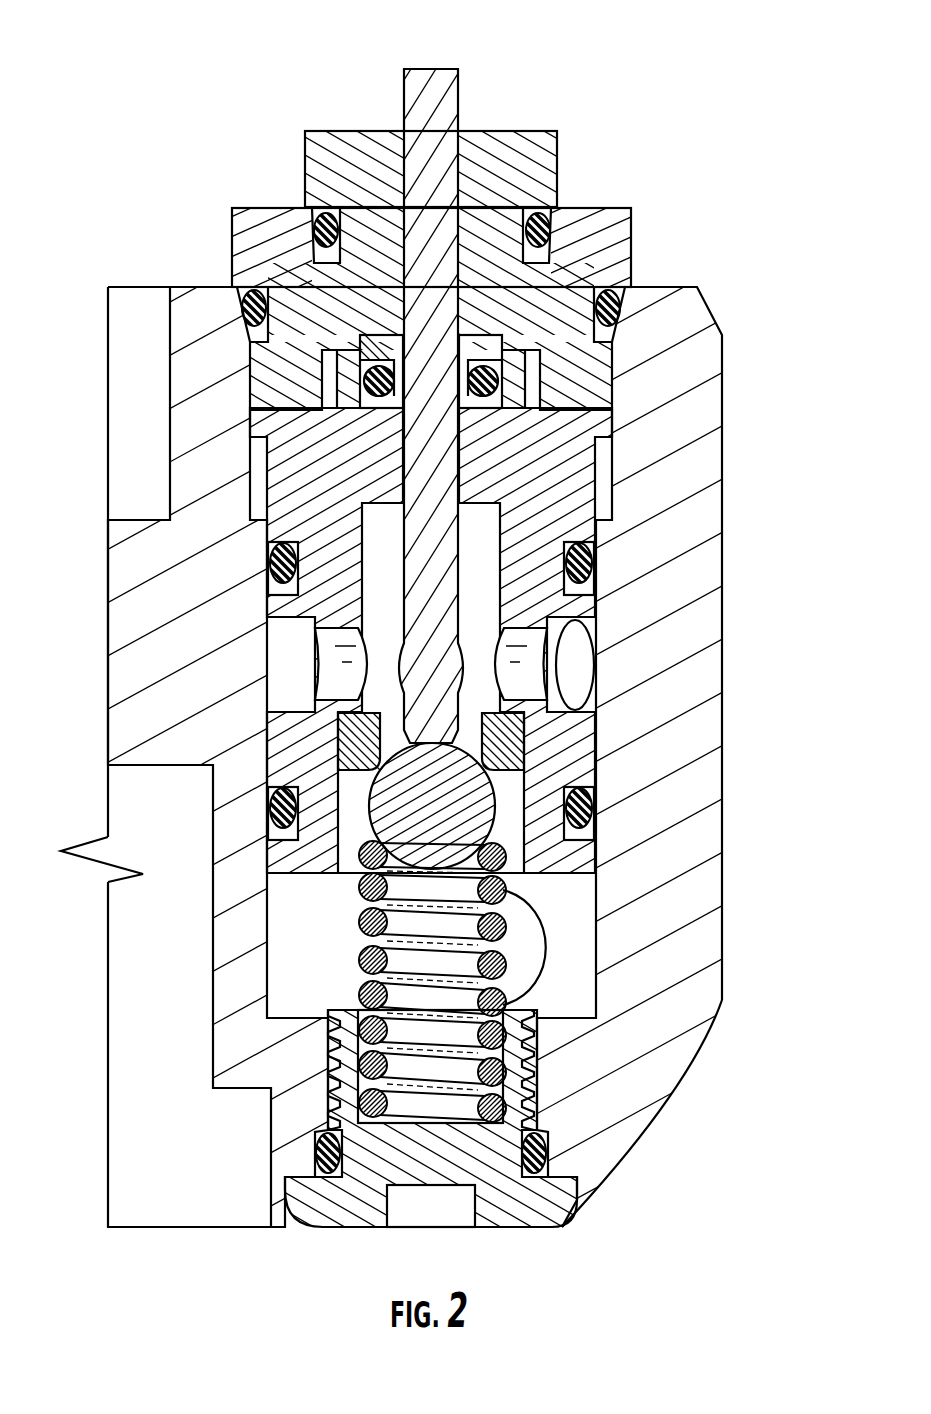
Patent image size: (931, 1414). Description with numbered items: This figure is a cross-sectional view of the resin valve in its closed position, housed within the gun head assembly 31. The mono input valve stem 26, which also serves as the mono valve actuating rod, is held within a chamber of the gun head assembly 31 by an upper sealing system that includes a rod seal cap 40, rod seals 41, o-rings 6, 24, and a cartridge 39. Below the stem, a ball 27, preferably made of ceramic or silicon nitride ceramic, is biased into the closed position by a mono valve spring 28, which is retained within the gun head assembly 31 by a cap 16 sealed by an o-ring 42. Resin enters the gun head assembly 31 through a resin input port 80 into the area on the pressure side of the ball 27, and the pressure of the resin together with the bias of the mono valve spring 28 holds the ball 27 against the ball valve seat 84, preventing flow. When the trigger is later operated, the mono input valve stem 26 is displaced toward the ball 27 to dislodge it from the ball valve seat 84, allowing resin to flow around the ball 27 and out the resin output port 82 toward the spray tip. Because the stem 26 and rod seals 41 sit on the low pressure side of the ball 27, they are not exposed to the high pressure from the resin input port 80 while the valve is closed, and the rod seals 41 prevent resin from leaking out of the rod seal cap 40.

The o-ring 6 is at (618, 310).
The cap 16 is at (512, 1222).
The o-ring 24 is at (593, 567).
The mono input valve stem 26 is at (445, 102).
The ball 27 is at (400, 803).
The mono valve spring 28 is at (365, 958).
The gun head assembly 31 is at (673, 1058).
The cartridge 39 is at (610, 242).
The rod seal cap 40 is at (537, 157).
The rod seal 41 is at (360, 350).
The o-ring 42 is at (322, 1150).
The resin input port 80 is at (522, 925).
The resin output port 82 is at (577, 666).
The ball valve seat 84 is at (355, 742).